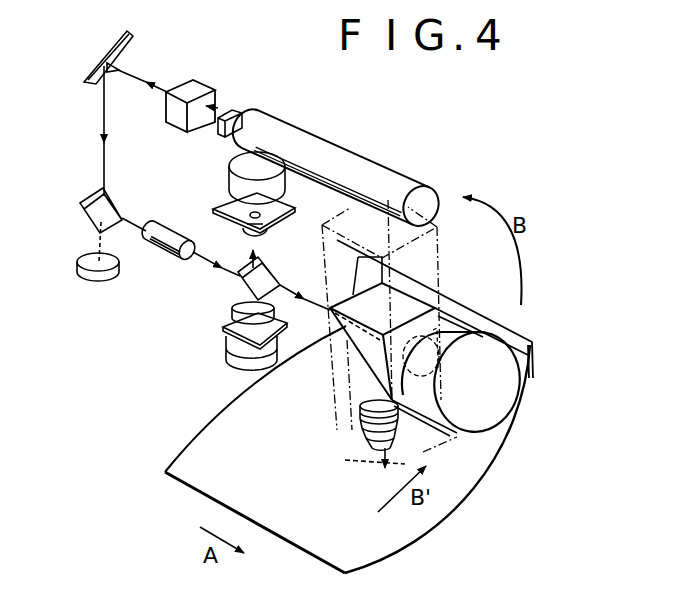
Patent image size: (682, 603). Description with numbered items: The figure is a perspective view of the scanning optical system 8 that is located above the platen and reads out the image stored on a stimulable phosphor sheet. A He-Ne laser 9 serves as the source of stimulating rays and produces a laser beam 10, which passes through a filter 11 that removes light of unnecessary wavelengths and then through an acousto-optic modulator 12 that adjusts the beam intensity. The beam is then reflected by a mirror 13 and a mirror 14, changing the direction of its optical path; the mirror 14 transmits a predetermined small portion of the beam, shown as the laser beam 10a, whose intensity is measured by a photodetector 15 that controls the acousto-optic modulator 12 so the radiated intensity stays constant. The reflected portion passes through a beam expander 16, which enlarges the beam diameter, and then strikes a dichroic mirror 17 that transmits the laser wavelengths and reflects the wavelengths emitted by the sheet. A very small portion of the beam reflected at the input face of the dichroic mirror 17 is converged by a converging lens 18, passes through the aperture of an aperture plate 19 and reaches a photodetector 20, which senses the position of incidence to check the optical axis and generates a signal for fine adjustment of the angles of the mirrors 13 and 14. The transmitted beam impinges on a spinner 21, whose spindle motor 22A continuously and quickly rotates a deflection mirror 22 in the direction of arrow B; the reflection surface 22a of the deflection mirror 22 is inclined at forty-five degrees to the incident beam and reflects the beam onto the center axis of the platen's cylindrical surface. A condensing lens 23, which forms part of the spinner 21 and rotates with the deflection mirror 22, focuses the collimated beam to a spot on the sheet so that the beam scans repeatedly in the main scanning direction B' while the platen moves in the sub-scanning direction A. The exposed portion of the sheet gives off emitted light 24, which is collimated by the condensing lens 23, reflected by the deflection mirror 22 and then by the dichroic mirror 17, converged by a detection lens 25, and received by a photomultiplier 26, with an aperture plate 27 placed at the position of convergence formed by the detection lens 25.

The scanning optical system 8 is at (470, 155).
The He-Ne laser 9 is at (378, 170).
The laser beam 10 is at (217, 98).
The laser beam 10a is at (97, 238).
The filter 11 is at (244, 108).
The acousto-optic modulator 12 is at (187, 86).
The mirror 13 is at (86, 71).
The mirror 14 is at (79, 203).
The photodetector 15 is at (104, 284).
The beam expander 16 is at (160, 229).
The dichroic mirror 17 is at (275, 270).
The converging lens 18 is at (231, 303).
The aperture plate 19 is at (223, 328).
The photodetector 20 is at (242, 369).
The spinner 21 is at (471, 296).
The deflection mirror 22 is at (402, 302).
The reflection surface 22a is at (324, 378).
The spindle motor 22A is at (507, 372).
The condensing lens 23 is at (352, 435).
The emitted light 24 is at (368, 456).
The detection lens 25 is at (335, 220).
The photomultiplier 26 is at (234, 160).
The aperture plate 27 is at (217, 210).